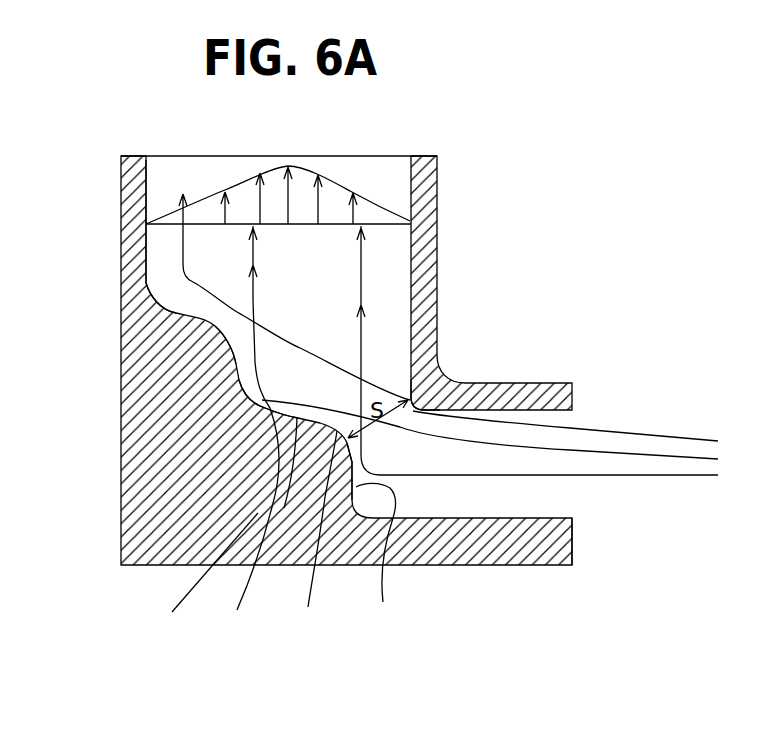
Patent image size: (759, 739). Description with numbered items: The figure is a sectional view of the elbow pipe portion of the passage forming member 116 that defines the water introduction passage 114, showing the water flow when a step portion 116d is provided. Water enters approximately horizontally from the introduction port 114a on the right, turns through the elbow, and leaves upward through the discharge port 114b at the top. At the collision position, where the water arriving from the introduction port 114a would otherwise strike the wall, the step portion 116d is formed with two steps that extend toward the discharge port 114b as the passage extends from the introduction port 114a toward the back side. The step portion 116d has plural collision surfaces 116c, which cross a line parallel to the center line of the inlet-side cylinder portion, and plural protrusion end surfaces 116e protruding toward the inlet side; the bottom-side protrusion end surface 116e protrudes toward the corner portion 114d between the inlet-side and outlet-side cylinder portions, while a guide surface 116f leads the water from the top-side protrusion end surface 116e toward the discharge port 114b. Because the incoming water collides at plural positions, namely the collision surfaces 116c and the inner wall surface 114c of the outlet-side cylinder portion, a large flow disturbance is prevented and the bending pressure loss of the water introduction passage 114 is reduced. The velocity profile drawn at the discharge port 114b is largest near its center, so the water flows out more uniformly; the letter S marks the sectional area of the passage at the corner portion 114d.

The water introduction passage 114 is at (388, 295).
The introduction port 114a is at (576, 504).
The discharge port 114b is at (372, 160).
The wall surface 114c is at (142, 258).
The corner portion 114d is at (404, 399).
The passage forming member 116 is at (112, 580).
The collision surfaces 116c is at (275, 511).
The step portion 116d is at (368, 481).
The protrusion end surfaces 116e is at (223, 328).
The guide surface 116f is at (167, 317).